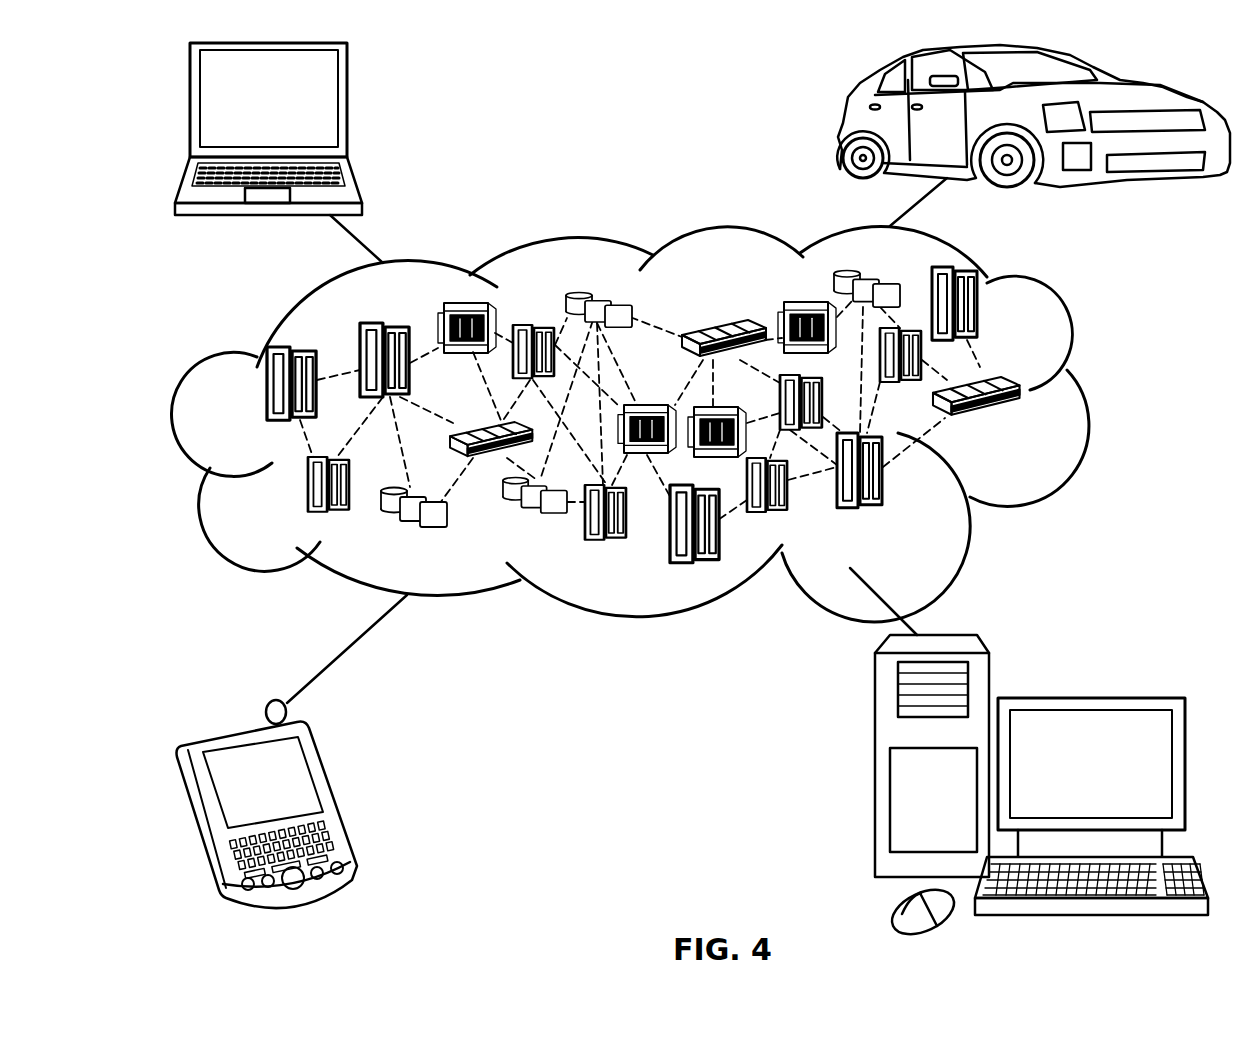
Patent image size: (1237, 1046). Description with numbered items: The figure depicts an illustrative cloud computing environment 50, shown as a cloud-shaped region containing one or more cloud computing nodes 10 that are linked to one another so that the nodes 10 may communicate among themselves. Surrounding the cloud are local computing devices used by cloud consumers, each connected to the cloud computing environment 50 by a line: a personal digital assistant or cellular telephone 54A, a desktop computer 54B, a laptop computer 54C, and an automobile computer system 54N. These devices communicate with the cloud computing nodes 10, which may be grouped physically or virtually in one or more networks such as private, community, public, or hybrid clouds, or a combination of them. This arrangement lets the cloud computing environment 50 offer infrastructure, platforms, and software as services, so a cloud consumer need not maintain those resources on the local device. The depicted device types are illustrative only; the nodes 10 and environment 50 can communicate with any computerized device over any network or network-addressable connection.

The cloud computing nodes 10 is at (702, 415).
The cloud computing environment 50 is at (1088, 392).
The personal digital assistant (PDA) or cellular telephone 54A is at (333, 795).
The desktop computer 54B is at (1090, 698).
The laptop computer 54C is at (347, 108).
The automobile computer system 54N is at (840, 122).